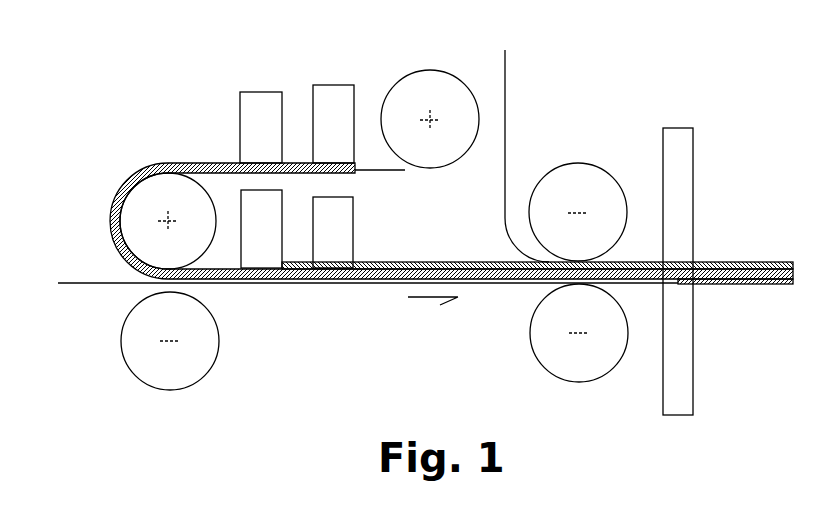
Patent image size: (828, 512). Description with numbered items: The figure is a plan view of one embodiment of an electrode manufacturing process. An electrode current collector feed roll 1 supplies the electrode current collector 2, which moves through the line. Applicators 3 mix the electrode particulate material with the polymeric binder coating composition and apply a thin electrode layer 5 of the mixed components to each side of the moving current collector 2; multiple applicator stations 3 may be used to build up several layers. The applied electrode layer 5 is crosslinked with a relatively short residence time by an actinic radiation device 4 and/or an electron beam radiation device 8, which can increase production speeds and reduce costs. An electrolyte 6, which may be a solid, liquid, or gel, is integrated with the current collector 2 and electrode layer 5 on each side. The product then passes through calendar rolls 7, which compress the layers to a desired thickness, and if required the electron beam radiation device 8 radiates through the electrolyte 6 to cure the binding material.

The electrode current collector feed roll 1 is at (415, 72).
The electrode current collector 2 is at (370, 172).
The applicator 3 is at (335, 83).
The actinic radiation device 4 is at (260, 92).
The electrode layer 5 is at (187, 163).
The electrolyte 6 is at (95, 283).
The calendar rolls 7 is at (572, 163).
The electron beam radiation device 8 is at (682, 128).